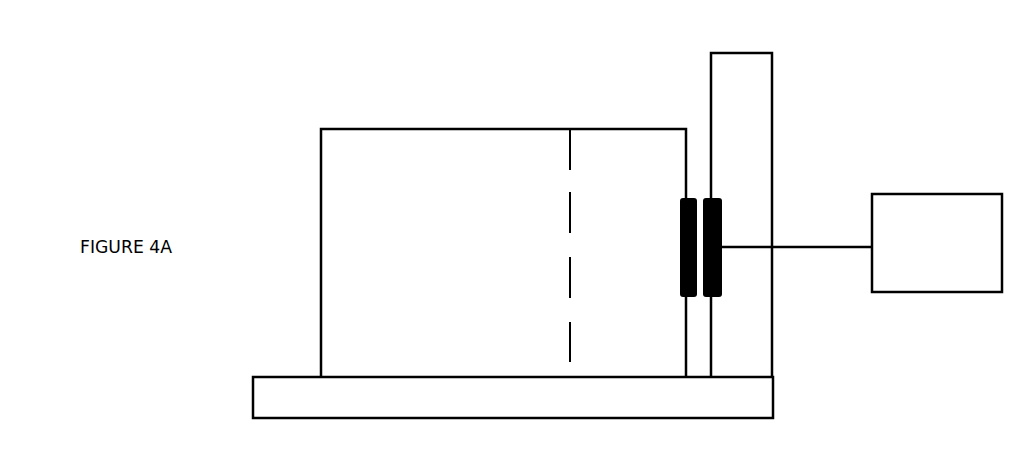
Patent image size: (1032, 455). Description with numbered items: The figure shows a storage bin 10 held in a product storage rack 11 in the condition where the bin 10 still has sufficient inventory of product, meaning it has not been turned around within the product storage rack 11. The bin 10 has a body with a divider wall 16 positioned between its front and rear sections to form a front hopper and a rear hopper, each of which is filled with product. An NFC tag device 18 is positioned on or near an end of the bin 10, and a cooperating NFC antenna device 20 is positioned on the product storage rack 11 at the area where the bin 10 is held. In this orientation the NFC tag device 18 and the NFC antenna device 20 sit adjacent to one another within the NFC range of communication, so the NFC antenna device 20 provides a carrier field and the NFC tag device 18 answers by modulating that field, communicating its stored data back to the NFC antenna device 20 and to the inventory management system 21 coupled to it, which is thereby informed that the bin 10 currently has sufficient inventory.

The bin 10 is at (300, 212).
The product storage rack 11 is at (795, 175).
The divider wall 16 is at (567, 212).
The NFC tag device 18 is at (676, 222).
The NFC antenna device 20 is at (723, 285).
The inventory management system 21 is at (913, 192).